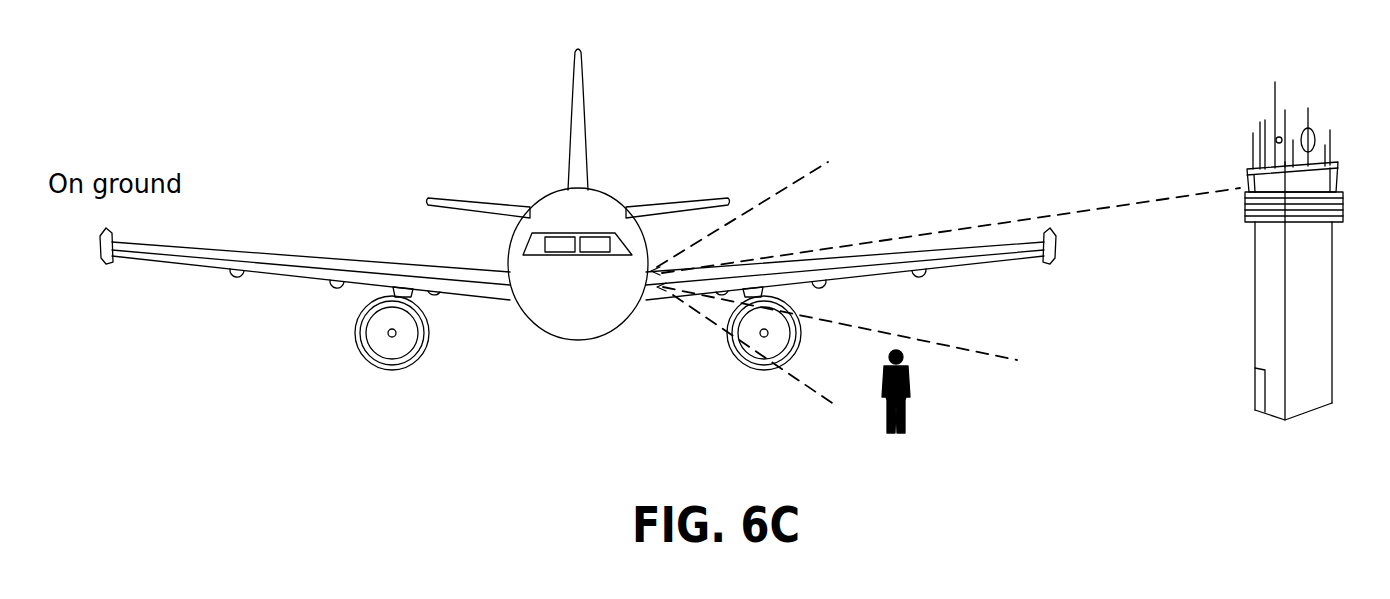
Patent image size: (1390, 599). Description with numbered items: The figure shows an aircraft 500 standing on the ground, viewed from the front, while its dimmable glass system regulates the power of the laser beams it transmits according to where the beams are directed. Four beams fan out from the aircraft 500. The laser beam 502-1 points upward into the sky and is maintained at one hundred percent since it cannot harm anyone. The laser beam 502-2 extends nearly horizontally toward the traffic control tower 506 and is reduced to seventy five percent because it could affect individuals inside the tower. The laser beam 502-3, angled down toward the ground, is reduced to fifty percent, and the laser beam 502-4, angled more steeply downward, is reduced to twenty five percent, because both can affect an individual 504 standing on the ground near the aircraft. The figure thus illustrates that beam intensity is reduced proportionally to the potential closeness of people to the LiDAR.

The aircraft 500 is at (548, 212).
The laser beam 502-1 is at (765, 198).
The laser beam 502-2 is at (1017, 217).
The laser beam 502-3 is at (985, 352).
The laser beam 502-4 is at (805, 383).
The individual 504 is at (907, 377).
The traffic control tower 506 is at (1333, 308).